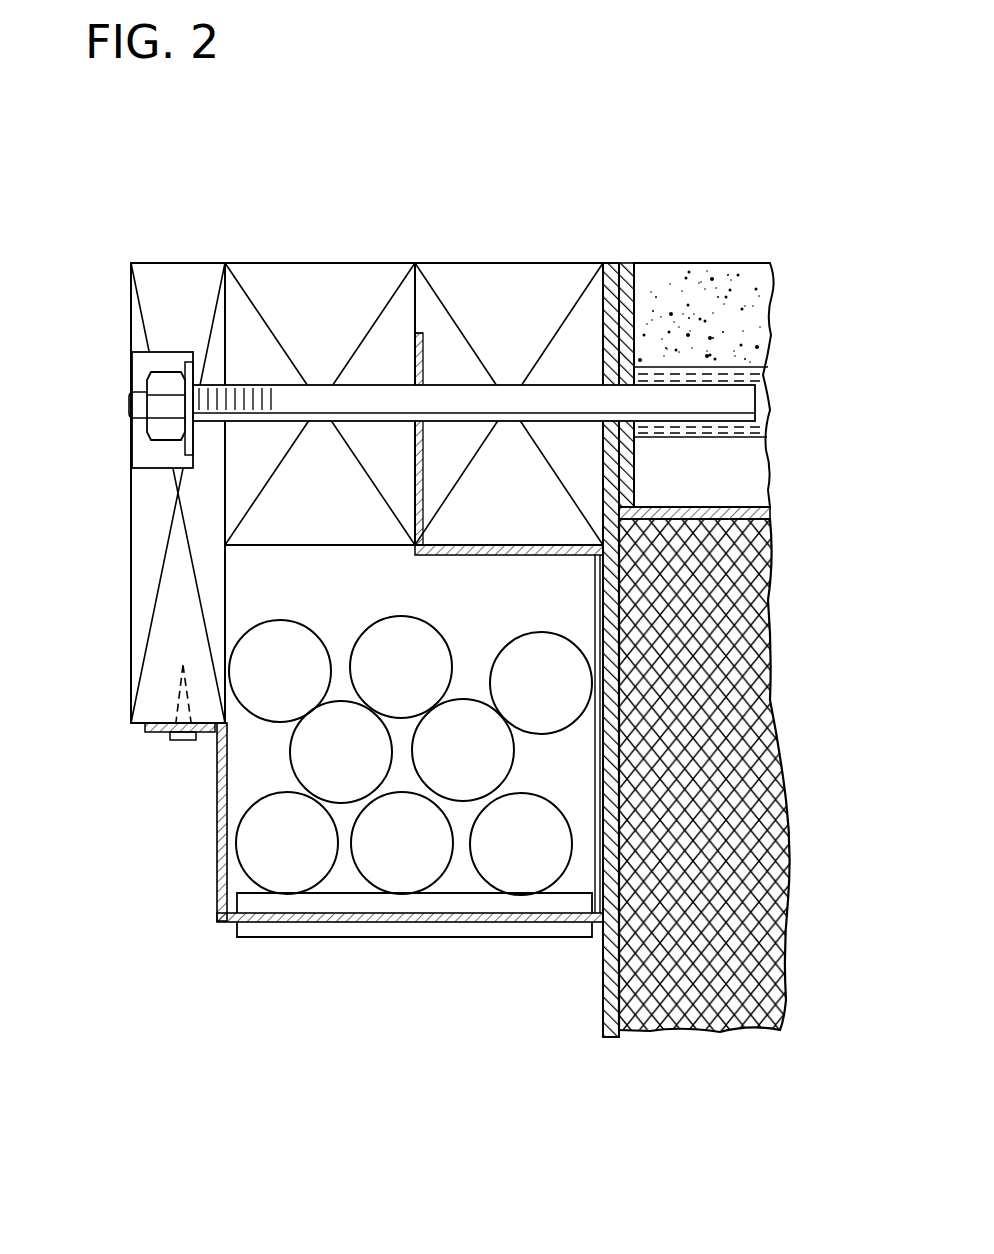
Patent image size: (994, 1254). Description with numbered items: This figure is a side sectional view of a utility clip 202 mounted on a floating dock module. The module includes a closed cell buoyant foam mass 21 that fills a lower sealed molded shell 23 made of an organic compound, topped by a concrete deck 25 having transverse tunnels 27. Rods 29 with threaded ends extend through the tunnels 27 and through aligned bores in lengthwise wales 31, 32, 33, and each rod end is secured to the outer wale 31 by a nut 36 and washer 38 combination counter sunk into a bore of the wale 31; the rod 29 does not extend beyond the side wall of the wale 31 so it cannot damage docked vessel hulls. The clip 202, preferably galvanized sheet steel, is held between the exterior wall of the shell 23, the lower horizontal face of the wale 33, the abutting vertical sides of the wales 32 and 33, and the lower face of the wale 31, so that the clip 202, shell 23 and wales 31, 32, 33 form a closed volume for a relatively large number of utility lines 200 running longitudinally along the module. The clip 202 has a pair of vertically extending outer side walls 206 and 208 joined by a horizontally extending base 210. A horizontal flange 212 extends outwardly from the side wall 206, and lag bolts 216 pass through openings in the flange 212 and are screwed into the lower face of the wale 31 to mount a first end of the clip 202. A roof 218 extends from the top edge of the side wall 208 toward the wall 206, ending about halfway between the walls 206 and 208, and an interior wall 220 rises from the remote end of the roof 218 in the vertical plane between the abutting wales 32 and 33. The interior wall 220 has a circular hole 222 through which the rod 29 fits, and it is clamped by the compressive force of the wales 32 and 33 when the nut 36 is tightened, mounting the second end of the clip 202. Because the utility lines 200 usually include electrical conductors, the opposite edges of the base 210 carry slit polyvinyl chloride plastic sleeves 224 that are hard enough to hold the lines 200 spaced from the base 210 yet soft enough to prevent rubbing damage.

The closed cell buoyant foam mass 21 is at (742, 688).
The lower sealed molded shell 23 is at (600, 985).
The concrete deck 25 is at (690, 270).
The transverse tunnels 27 is at (752, 382).
The rods 29 is at (750, 410).
The wale 31 is at (171, 272).
The wale 32 is at (311, 268).
The wale 33 is at (553, 270).
The nut 36 is at (172, 378).
The washer 38 is at (166, 455).
The utility lines 200 is at (252, 855).
The utility clip 202 is at (205, 912).
The outer side wall 206 is at (215, 790).
The outer side wall 208 is at (610, 860).
The base 210 is at (345, 926).
The horizontal flange 212 is at (150, 730).
The lag bolts 216 is at (180, 690).
The roof 218 is at (496, 545).
The interior wall 220 is at (425, 343).
The circular hole 222 is at (405, 378).
The plastic sleeves 224 is at (263, 940).